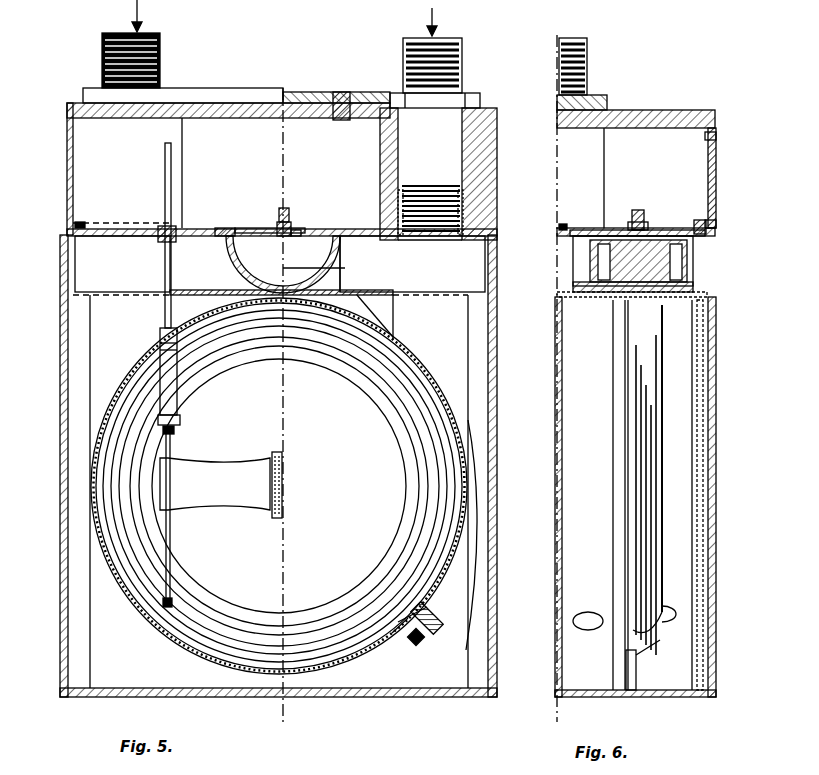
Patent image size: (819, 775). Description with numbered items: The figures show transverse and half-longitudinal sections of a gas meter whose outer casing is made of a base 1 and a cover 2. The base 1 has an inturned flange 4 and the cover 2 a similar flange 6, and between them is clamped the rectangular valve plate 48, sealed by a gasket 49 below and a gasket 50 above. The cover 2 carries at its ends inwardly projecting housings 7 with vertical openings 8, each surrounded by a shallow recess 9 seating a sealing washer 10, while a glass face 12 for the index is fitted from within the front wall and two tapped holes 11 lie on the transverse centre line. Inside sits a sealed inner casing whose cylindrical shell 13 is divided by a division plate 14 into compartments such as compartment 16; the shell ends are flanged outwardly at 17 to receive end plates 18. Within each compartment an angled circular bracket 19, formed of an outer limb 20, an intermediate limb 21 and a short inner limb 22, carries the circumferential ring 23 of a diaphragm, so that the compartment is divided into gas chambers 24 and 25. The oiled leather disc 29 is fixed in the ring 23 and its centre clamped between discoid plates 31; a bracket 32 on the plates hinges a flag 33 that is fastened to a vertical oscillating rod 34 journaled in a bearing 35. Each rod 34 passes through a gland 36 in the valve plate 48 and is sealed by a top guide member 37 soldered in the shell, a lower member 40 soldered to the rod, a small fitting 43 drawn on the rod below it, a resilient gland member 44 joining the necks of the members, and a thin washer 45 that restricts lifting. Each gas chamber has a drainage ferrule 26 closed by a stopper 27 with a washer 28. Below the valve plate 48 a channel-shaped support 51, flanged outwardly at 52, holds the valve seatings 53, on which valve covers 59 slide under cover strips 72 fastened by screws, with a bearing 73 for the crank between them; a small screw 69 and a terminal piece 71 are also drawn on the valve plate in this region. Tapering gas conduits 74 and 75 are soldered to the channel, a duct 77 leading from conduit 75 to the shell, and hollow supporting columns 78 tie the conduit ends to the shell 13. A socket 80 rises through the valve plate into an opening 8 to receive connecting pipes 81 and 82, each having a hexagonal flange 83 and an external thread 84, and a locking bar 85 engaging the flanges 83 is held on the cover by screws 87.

In FIG. 5, the base 1 is at (60, 345).
In FIG. 6, the base 1 is at (716, 358).
In FIG. 5, the cover 2 is at (67, 137).
In FIG. 6, the cover 2 is at (690, 110).
In FIG. 5, the flange 4 is at (67, 245).
In FIG. 6, the flange 4 is at (716, 240).
In FIG. 5, the flange 6 is at (82, 224).
In FIG. 5, the housing 7 is at (520, 167).
In FIG. 6, the housing 7 is at (560, 168).
In FIG. 5, the vertical opening 8 is at (380, 168).
In FIG. 5, the circular recess 9 is at (380, 120).
In FIG. 5, the sealing washer 10 is at (392, 92).
In FIG. 5, the tapped hole 11 is at (342, 120).
In FIG. 6, the glass face 12 is at (716, 158).
In FIG. 5, the cylindrical shell 13 is at (135, 362).
In FIG. 6, the cylindrical shell 13 is at (562, 688).
In FIG. 6, the division plate 14 is at (557, 638).
In FIG. 6, the gas compartment 16 is at (575, 484).
In FIG. 5, the outward flange 17 is at (345, 663).
In FIG. 6, the outward flange 17 is at (676, 697).
In FIG. 6, the end plate 18 is at (710, 683).
In FIG. 5, the circular bracket 19 is at (372, 643).
In FIG. 6, the circular bracket 19 is at (615, 580).
In FIG. 6, the outer limb 20 is at (562, 672).
In FIG. 6, the intermediate limb 21 is at (640, 690).
In FIG. 6, the inner limb 22 is at (638, 666).
In FIG. 5, the circumferential ring 23 is at (220, 640).
In FIG. 6, the circumferential ring 23 is at (626, 662).
In FIG. 6, the gas chamber 24 is at (596, 495).
In FIG. 6, the gas chamber 25 is at (675, 495).
In FIG. 5, the drainage ferrule 26 is at (413, 620).
In FIG. 6, the drainage ferrule 26 is at (590, 616).
In FIG. 5, the stopper 27 is at (422, 641).
In FIG. 5, the washer 28 is at (441, 615).
In FIG. 5, the oiled leather disc 29 is at (328, 355).
In FIG. 6, the oiled leather disc 29 is at (639, 495).
In FIG. 5, the discoid plate 31 is at (279, 486).
In FIG. 6, the discoid plate 31 is at (663, 487).
In FIG. 5, the bracket 32 is at (283, 513).
In FIG. 5, the flag 33 is at (215, 484).
In FIG. 5, the oscillating rod 34 is at (170, 546).
In FIG. 5, the bearing 35 is at (172, 600).
In FIG. 5, the gland 36 is at (158, 240).
In FIG. 5, the top guide member 37 is at (160, 333).
In FIG. 5, the lower member 40 is at (180, 420).
In FIG. 5, the collar 43 is at (176, 432).
In FIG. 5, the resilient gland member 44 is at (177, 403).
In FIG. 5, the thin metal washer 45 is at (154, 235).
In FIG. 5, the valve plate 48 is at (497, 232).
In FIG. 5, the gasket 49 is at (497, 242).
In FIG. 5, the gasket 50 is at (497, 228).
In FIG. 5, the channel-shaped support 51 is at (345, 268).
In FIG. 6, the channel-shaped support 51 is at (560, 295).
In FIG. 5, the outward flange 52 is at (344, 240).
In FIG. 5, the valve seating 53 is at (230, 260).
In FIG. 6, the valve seating 53 is at (573, 285).
In FIG. 5, the valve cover 59 is at (252, 228).
In FIG. 6, the valve cover 59 is at (664, 230).
In FIG. 5, the screw 69 is at (287, 208).
In FIG. 6, the screw 69 is at (640, 208).
In FIG. 5, the terminal 71 is at (281, 215).
In FIG. 6, the terminal 71 is at (705, 228).
In FIG. 5, the cover strip 72 is at (225, 228).
In FIG. 6, the cover strip 72 is at (615, 228).
In FIG. 5, the bearing 73 is at (296, 230).
In FIG. 6, the bearing 73 is at (563, 228).
In FIG. 5, the gas conduit 74 is at (122, 264).
In FIG. 5, the gas conduit 75 is at (412, 264).
In FIG. 5, the duct 77 is at (345, 286).
In FIG. 5, the supporting column 78 is at (270, 491).
In FIG. 5, the socket 80 is at (437, 240).
In FIG. 5, the connecting pipe 81 is at (160, 55).
In FIG. 5, the connecting pipe 82 is at (403, 48).
In FIG. 6, the connecting pipe 82 is at (588, 60).
In FIG. 5, the flange 83 is at (472, 93).
In FIG. 5, the external screw thread 84 is at (557, 55).
In FIG. 5, the locking bar 85 is at (233, 95).
In FIG. 6, the locking bar 85 is at (607, 100).
In FIG. 5, the screw 87 is at (340, 92).